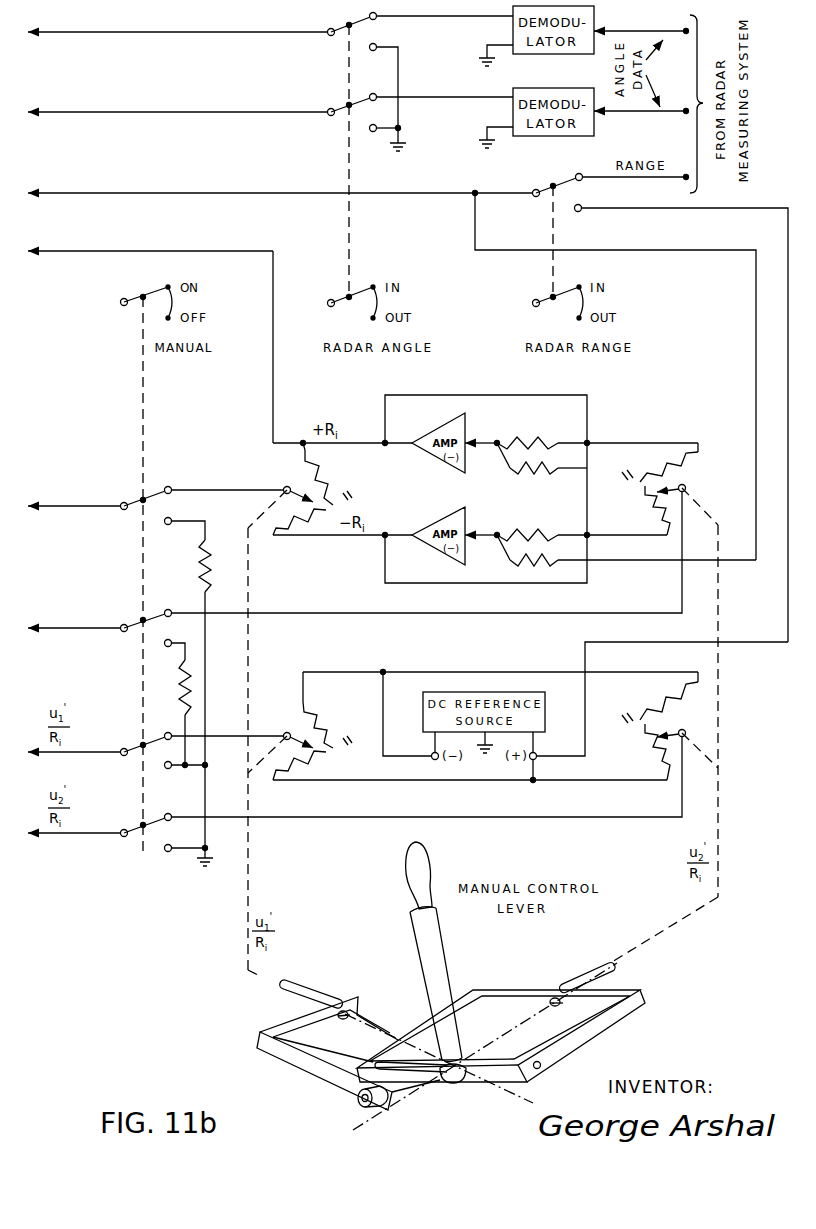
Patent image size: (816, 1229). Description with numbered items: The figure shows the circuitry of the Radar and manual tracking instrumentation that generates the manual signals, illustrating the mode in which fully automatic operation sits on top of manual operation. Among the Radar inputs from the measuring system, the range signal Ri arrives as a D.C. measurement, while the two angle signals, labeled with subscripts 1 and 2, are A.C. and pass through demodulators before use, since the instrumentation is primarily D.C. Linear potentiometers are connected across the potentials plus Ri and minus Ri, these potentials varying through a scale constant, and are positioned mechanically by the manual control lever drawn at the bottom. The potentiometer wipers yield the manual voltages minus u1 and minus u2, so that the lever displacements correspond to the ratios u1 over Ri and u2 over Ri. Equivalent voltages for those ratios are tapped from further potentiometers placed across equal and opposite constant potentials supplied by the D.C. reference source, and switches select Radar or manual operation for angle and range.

The e1 angle error signal line (first demodulator channel) 1 is at (270, 21).
The e2 angle error signal line (second demodulator channel) 2 is at (270, 101).
The range signal Ri is at (358, 182).
The manual signal voltage u1 is at (155, 495).
The manual signal voltage u2 is at (355, 562).